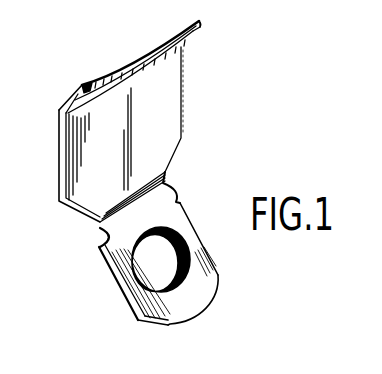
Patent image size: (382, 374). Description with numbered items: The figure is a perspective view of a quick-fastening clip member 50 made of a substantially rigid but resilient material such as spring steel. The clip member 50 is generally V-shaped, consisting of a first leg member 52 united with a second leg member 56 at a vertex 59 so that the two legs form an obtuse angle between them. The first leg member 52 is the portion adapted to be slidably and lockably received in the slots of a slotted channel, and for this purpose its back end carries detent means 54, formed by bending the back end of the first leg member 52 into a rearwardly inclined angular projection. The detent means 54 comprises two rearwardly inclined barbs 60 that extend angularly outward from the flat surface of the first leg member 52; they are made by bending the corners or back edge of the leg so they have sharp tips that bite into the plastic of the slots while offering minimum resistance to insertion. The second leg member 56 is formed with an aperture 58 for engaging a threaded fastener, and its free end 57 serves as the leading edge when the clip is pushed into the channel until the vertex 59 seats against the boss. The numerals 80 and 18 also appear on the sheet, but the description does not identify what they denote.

The clip member 50 is at (167, 175).
The first leg member 52 is at (80, 153).
The detent means 54 is at (144, 56).
The second leg member 56 is at (153, 276).
The free end 57 is at (192, 315).
The aperture 58 is at (192, 253).
The vertex 59 is at (100, 227).
The barbs 60 is at (80, 93).
The flange tip 80 is at (199, 32).
The member 18 is at (322, 362).